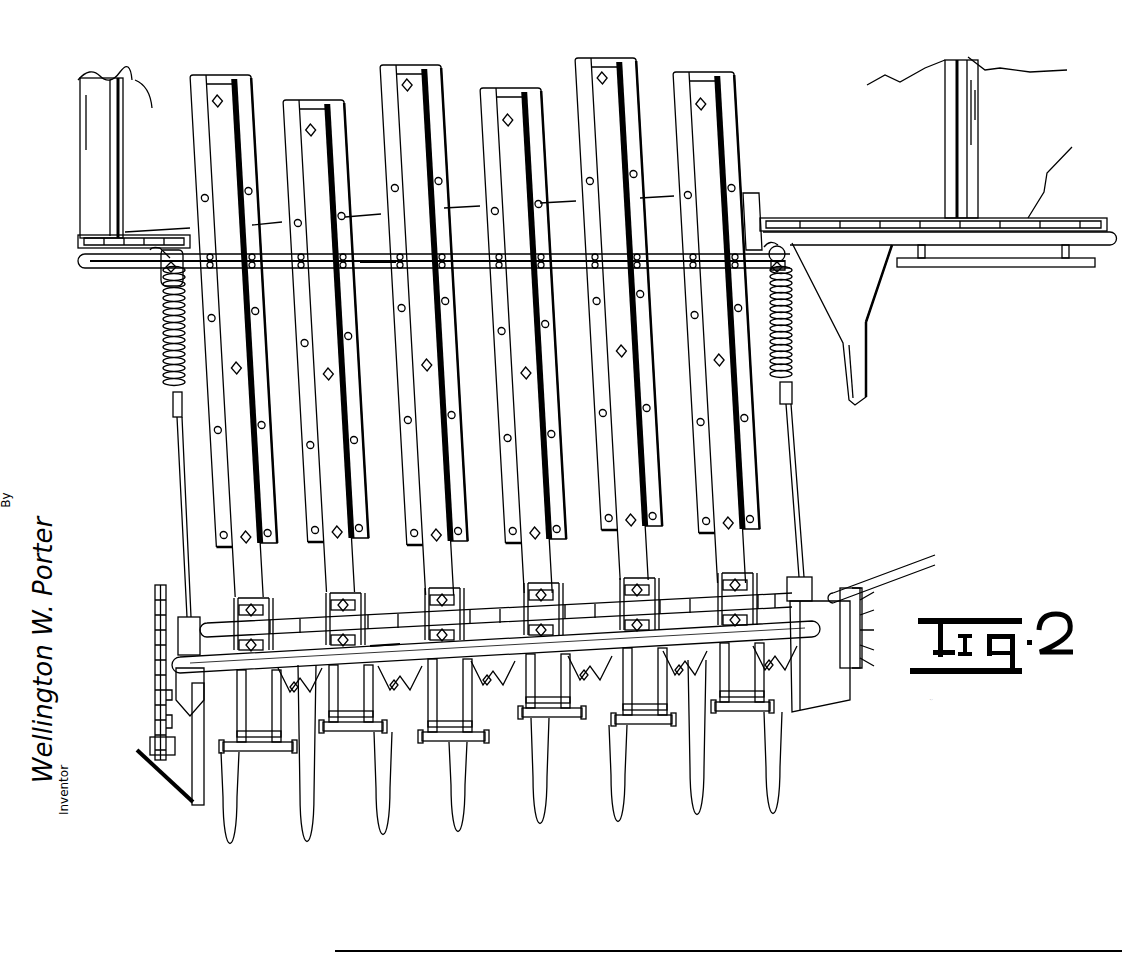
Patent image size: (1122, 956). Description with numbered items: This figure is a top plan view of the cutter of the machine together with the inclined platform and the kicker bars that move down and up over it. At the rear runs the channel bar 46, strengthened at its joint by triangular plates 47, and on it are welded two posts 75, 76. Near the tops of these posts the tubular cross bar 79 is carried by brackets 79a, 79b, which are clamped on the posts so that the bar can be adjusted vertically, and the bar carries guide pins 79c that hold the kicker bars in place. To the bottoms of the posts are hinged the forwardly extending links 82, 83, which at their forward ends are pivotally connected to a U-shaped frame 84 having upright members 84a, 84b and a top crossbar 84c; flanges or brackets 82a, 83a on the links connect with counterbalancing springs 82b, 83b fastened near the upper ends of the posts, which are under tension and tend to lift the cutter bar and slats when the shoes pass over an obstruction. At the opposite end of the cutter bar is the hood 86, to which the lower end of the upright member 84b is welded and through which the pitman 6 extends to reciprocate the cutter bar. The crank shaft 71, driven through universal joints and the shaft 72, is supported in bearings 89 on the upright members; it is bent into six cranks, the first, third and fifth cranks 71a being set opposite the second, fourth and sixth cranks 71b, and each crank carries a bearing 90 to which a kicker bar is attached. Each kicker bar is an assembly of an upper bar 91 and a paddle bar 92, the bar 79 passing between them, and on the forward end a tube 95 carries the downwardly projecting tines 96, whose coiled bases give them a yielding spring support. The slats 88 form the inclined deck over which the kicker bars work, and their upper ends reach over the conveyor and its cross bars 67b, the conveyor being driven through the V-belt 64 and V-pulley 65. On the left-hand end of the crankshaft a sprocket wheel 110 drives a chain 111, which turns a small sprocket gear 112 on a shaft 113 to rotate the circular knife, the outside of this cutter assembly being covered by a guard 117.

The pitman 6 is at (862, 620).
The channel bar 46 is at (1062, 258).
The triangular plates 47 is at (868, 300).
The V-belt 64 is at (1020, 268).
The V-pulley 65 is at (930, 268).
The cross bars 67b is at (115, 152).
The crank shaft 71 is at (683, 590).
The first, third and fifth cranks 71a is at (282, 612).
The second, fourth and sixth cranks 71b is at (374, 610).
The shaft 72 is at (914, 554).
The post 75 is at (166, 276).
The post 76 is at (793, 262).
The tubular cross bar 79 is at (655, 252).
The bracket 79a is at (150, 262).
The bracket 79b is at (796, 250).
The guide pins 79c is at (392, 266).
The bar (link) 82 is at (177, 456).
The flange or bracket 82a is at (172, 406).
The counter balancing spring 82b is at (166, 350).
The bar (link) 83 is at (800, 452).
The flange or bracket 83a is at (794, 401).
The counter balancing spring 83b is at (794, 345).
The U-shaped frame 84 is at (486, 682).
The upright member 84a is at (176, 668).
The upright member 84b is at (820, 656).
The crossbar 84c is at (380, 650).
The hood 86 is at (818, 676).
The slats 88 is at (757, 197).
The bearings 89 is at (182, 648).
The bearing 90 is at (325, 613).
The upper bar 91 is at (330, 322).
The paddle bar 92 is at (318, 356).
The tube 95 is at (612, 722).
The tines 96 is at (372, 705).
The sprocket wheel 110 is at (152, 597).
The chain 111 is at (157, 694).
The small sprocket gear 112 is at (157, 723).
The shaft 113 is at (150, 742).
The guard 117 is at (168, 782).